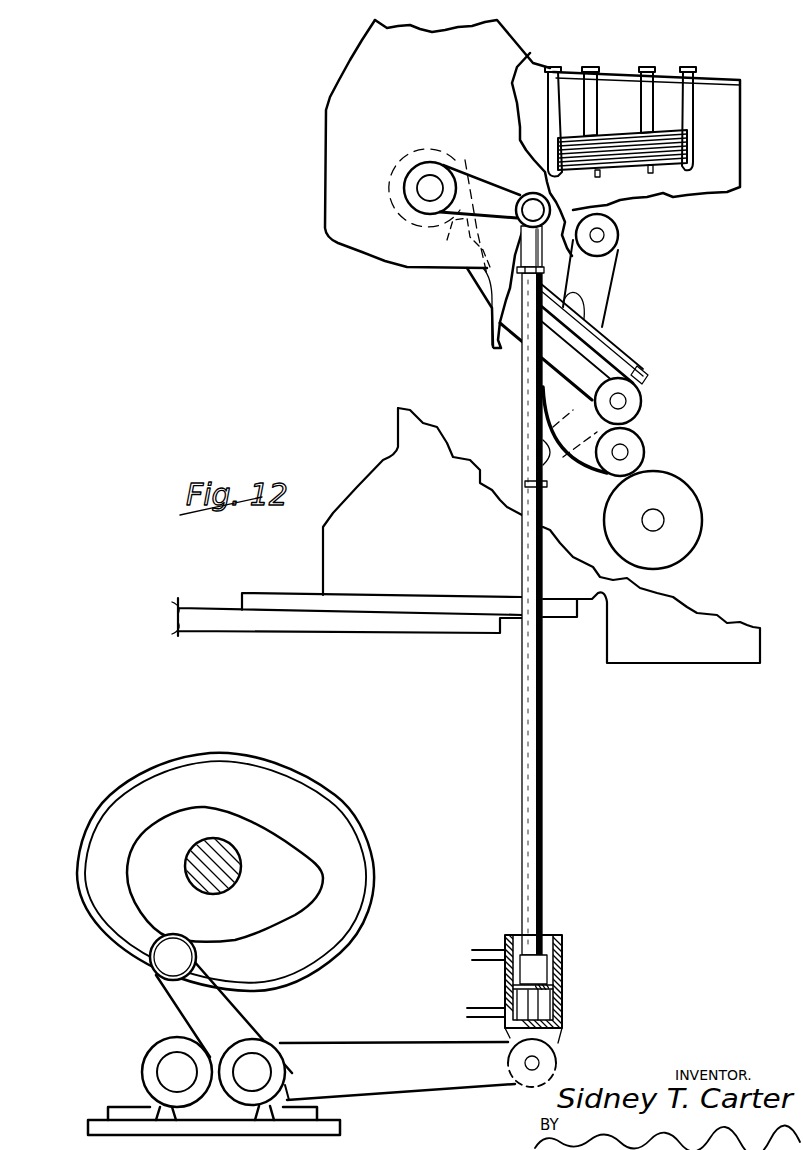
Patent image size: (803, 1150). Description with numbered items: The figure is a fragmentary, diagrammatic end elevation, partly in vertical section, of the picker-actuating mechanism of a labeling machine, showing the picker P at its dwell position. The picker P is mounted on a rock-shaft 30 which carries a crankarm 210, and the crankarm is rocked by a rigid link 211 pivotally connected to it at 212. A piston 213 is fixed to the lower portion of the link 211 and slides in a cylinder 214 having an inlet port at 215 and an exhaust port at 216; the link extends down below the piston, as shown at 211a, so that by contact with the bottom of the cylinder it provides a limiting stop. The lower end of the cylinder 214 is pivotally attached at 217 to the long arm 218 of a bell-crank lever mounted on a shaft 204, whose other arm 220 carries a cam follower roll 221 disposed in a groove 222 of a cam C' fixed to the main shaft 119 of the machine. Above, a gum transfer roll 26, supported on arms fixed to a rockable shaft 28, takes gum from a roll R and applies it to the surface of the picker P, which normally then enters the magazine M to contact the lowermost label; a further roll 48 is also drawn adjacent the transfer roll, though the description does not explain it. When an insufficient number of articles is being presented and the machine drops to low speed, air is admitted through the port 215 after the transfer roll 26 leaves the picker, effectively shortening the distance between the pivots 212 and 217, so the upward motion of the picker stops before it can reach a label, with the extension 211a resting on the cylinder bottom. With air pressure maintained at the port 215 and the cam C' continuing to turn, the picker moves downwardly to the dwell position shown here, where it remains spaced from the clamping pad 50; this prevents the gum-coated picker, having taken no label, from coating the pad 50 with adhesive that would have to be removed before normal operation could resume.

The magazine M is at (672, 64).
The crankarm 210 is at (493, 188).
The rock-shaft 30 is at (430, 188).
The pivot 212 is at (533, 210).
The shaft 28 is at (597, 235).
The clamping pad 50 is at (587, 357).
The picker P is at (553, 368).
The pulley 48 is at (618, 401).
The gum transfer roll 26 is at (620, 452).
The roll R is at (690, 522).
The rigid link 211 is at (545, 728).
The cam C' is at (248, 872).
The main shaft 119 is at (243, 871).
The groove 222 is at (92, 887).
The cam follower roll 221 is at (152, 975).
The arm 220 is at (237, 1023).
The shaft 204 is at (257, 1067).
The long arm 218 is at (424, 1043).
The inlet port 215 is at (508, 950).
The cylinder 214 is at (563, 946).
The piston 213 is at (545, 980).
The exhaust port 216 is at (505, 1010).
The extension 211a is at (540, 1009).
The pivot 217 is at (536, 1061).